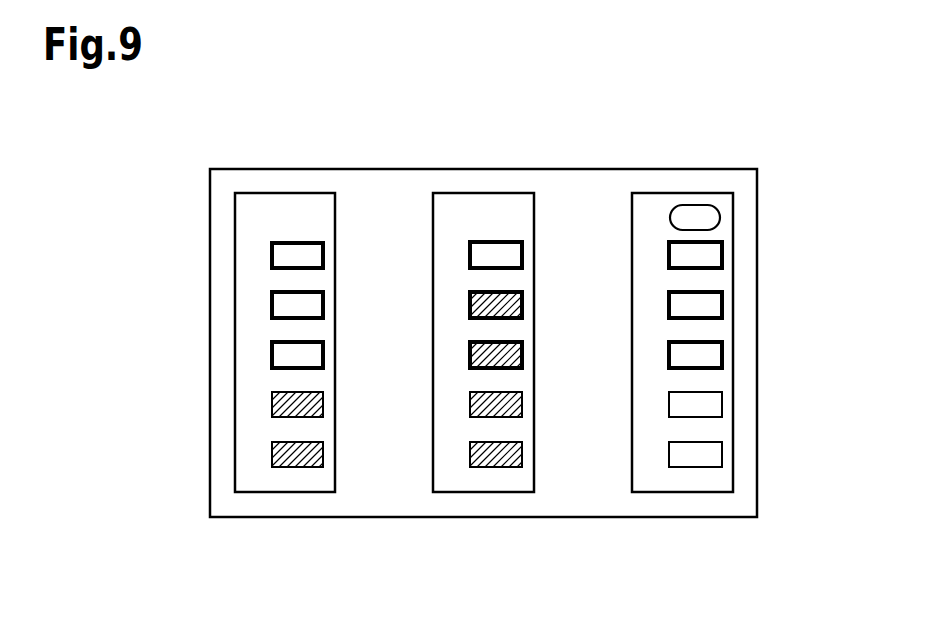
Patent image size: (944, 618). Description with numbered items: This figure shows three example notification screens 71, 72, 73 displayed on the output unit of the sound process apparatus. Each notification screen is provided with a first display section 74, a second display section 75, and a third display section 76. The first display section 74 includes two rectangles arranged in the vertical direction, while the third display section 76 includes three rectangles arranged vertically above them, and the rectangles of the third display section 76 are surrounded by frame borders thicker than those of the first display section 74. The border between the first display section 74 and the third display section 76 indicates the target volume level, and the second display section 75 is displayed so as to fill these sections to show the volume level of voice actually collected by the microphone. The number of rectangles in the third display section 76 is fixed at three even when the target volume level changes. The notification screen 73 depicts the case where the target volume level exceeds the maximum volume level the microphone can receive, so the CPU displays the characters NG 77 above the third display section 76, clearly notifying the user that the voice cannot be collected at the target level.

The notification screen 71 is at (288, 192).
The notification screen 72 is at (492, 192).
The notification screen 73 is at (677, 192).
The first display section 74 is at (272, 403).
The second display section 75 is at (317, 407).
The third display section 76 is at (470, 345).
The characters NG 77 is at (670, 217).